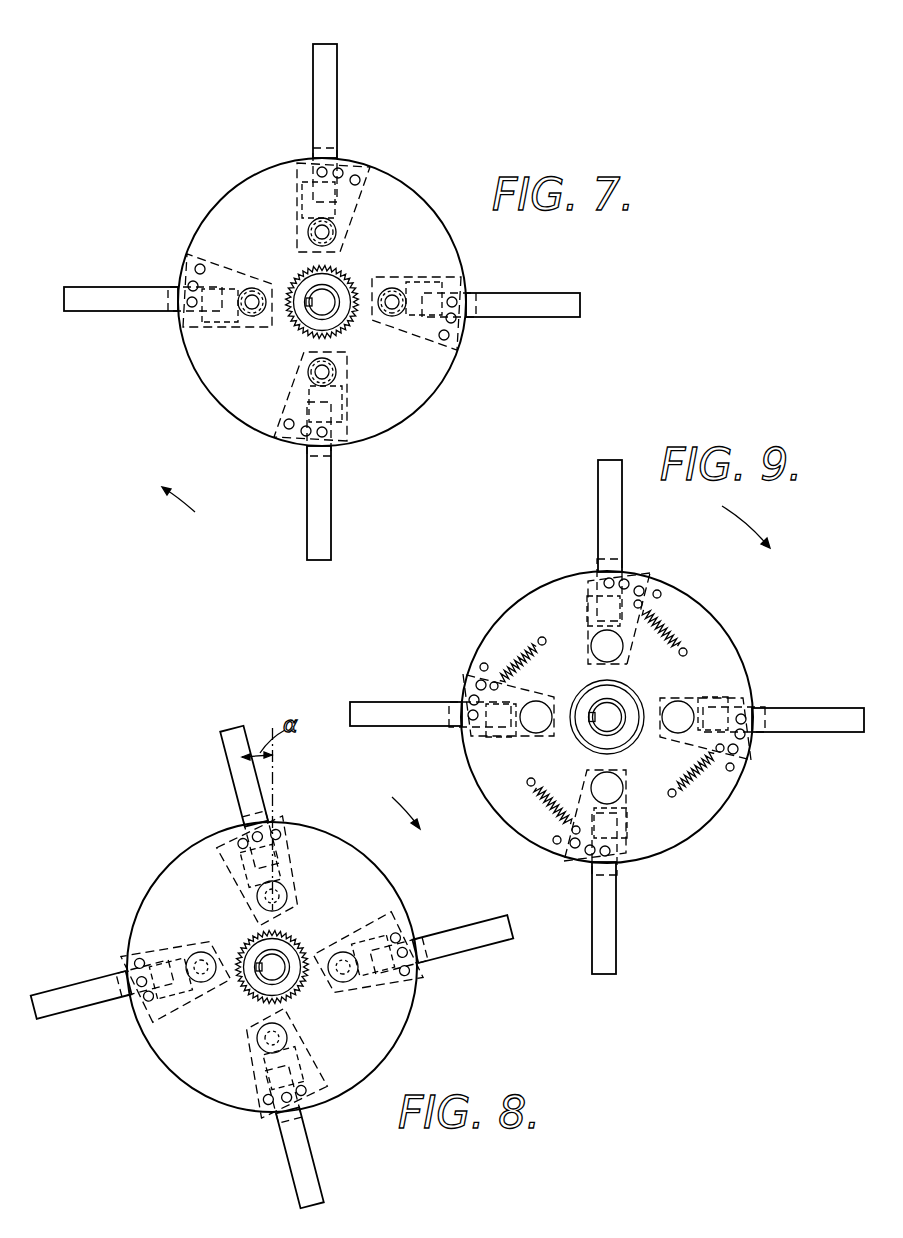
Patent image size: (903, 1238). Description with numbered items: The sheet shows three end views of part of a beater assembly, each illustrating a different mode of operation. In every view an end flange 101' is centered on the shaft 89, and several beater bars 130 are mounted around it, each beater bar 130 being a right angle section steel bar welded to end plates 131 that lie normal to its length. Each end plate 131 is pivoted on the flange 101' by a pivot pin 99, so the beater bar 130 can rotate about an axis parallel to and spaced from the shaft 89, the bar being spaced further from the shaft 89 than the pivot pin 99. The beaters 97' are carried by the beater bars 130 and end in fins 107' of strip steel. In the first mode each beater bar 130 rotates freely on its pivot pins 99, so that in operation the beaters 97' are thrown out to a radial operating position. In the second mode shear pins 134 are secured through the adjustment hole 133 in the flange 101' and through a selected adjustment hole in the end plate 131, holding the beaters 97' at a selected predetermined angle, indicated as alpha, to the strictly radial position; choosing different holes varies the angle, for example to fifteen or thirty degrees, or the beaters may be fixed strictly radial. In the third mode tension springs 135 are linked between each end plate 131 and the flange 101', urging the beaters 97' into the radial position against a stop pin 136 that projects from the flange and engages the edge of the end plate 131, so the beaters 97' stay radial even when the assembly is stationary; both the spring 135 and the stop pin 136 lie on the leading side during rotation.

In FIG. 7, the shaft 89 is at (332, 312).
In FIG. 9, the shaft 89 is at (603, 725).
In FIG. 8, the shaft 89 is at (268, 950).
In FIG. 7, the beaters 97' is at (306, 153).
In FIG. 9, the beaters 97' is at (630, 568).
In FIG. 8, the beaters 97' is at (272, 827).
In FIG. 7, the pivot pin 99 is at (294, 240).
In FIG. 9, the pivot pin 99 is at (627, 653).
In FIG. 8, the pivot pin 99 is at (298, 896).
In FIG. 7, the end flange 101' is at (305, 302).
In FIG. 9, the end flange 101' is at (631, 717).
In FIG. 7, the fins 107' is at (292, 123).
In FIG. 9, the fins 107' is at (577, 540).
In FIG. 8, the fins 107' is at (216, 807).
In FIG. 7, the beater bar 130 is at (306, 190).
In FIG. 9, the beater bar 130 is at (586, 598).
In FIG. 9, the end plate 131 is at (652, 598).
In FIG. 7, the adjustment hole 133 is at (362, 156).
In FIG. 8, the adjustment hole 133 is at (217, 817).
In FIG. 8, the shear pins 134 is at (316, 813).
In FIG. 9, the tension springs 135 is at (700, 622).
In FIG. 9, the stop pin 136 is at (689, 577).